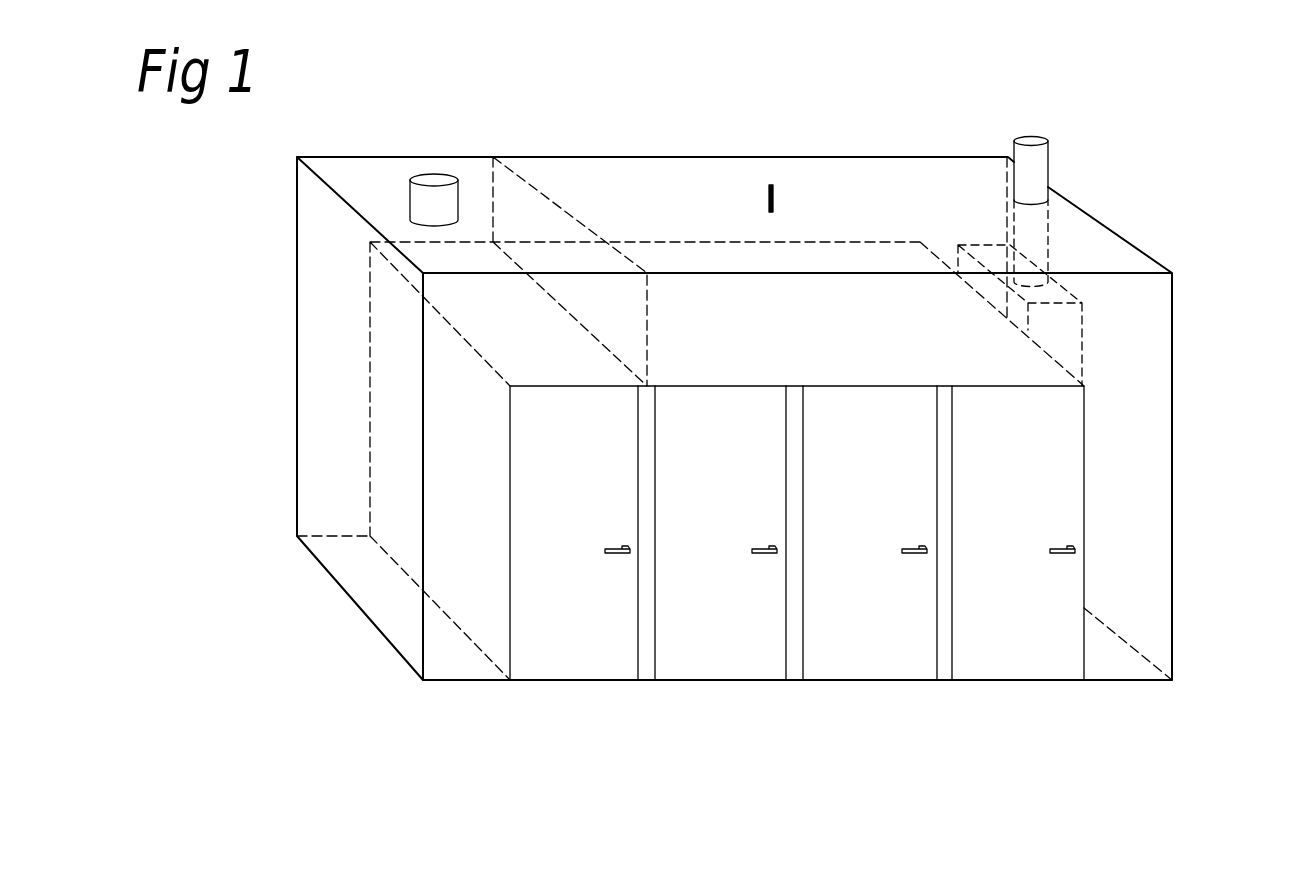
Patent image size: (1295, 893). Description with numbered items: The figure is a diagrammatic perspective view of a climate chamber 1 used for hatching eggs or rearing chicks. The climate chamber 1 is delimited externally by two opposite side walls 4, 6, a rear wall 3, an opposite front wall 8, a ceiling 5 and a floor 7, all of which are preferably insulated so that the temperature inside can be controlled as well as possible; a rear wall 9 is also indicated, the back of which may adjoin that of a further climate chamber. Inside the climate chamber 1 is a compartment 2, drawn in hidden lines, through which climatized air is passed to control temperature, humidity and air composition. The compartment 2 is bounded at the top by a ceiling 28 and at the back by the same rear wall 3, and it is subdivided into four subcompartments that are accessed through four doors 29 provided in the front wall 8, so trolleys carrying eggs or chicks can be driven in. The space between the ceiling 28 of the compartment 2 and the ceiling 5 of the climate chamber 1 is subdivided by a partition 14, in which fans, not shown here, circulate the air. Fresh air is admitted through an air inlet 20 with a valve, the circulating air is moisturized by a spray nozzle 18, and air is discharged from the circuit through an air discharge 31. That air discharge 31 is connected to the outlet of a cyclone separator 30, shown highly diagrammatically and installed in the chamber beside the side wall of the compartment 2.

The climate chamber 1 is at (1058, 131).
The compartment 2 is at (1050, 280).
The rear wall 3 is at (893, 210).
The side wall 4 is at (1172, 427).
The ceiling 5 is at (647, 197).
The side wall 6 is at (332, 468).
The floor 7 is at (1113, 682).
The front wall 8 is at (1133, 524).
The rear wall 9 is at (337, 310).
The partition 14 is at (530, 217).
The spray nozzle 18 is at (773, 197).
The air inlet 20 is at (418, 203).
The ceiling 28 is at (1023, 377).
The doors 29 is at (712, 620).
The cyclone separator 30 is at (1065, 322).
The air discharge 31 is at (1038, 163).